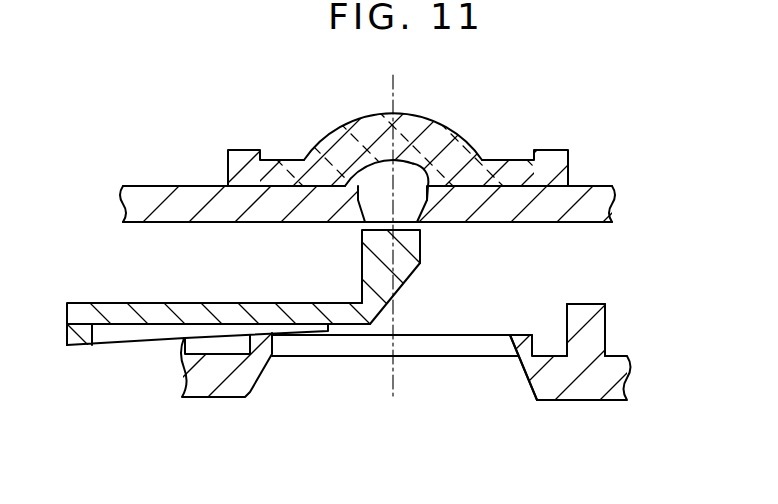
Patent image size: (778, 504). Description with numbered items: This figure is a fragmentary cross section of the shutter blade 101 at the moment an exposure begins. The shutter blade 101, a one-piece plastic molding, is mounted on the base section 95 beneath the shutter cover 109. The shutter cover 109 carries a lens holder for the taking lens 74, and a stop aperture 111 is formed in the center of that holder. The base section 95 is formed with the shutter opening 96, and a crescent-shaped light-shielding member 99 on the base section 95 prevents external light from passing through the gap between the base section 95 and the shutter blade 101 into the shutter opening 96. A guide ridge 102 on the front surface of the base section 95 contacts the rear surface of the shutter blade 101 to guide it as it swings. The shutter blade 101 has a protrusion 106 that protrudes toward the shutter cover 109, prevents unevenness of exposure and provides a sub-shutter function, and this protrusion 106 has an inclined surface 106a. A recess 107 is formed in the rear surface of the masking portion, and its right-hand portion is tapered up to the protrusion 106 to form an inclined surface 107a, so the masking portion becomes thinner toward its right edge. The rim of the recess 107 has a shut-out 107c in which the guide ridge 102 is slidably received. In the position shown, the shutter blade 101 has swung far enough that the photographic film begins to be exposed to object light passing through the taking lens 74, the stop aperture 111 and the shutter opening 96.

The taking lens 74 is at (348, 122).
The shutter cover 109 is at (178, 196).
The stop aperture 111 is at (415, 168).
The shutter blade 101 is at (195, 298).
The guide ridge 102 is at (228, 342).
The protrusion 106 is at (405, 249).
The inclined surface 106a is at (406, 284).
The recess 107 is at (122, 346).
The inclined surface 107a is at (345, 336).
The shut-out 107c is at (72, 348).
The shutter opening 96 is at (512, 340).
The light-shielding member 99 is at (598, 323).
The base section 95 is at (587, 393).